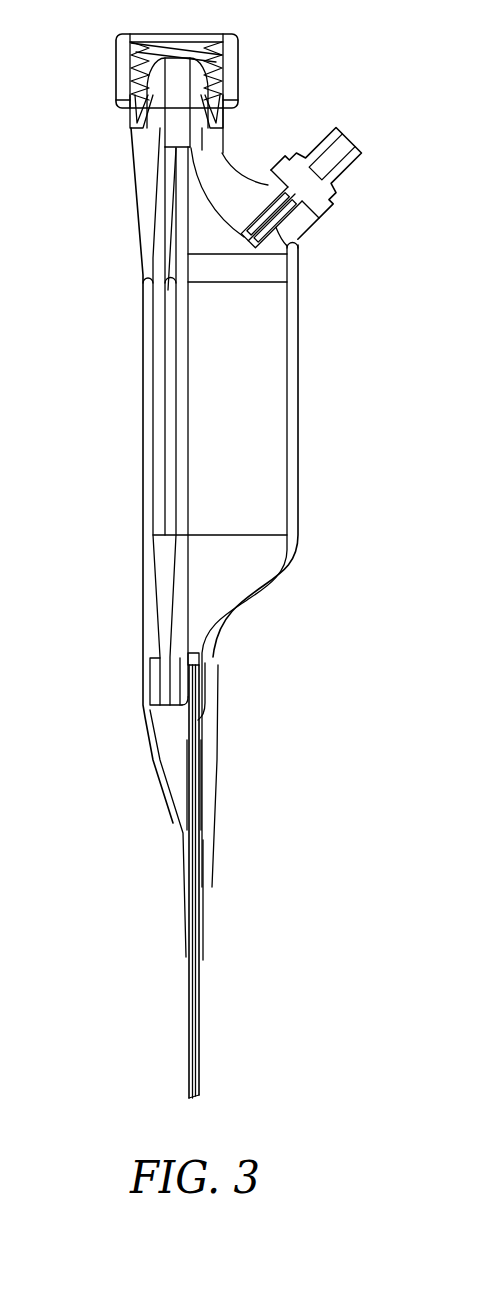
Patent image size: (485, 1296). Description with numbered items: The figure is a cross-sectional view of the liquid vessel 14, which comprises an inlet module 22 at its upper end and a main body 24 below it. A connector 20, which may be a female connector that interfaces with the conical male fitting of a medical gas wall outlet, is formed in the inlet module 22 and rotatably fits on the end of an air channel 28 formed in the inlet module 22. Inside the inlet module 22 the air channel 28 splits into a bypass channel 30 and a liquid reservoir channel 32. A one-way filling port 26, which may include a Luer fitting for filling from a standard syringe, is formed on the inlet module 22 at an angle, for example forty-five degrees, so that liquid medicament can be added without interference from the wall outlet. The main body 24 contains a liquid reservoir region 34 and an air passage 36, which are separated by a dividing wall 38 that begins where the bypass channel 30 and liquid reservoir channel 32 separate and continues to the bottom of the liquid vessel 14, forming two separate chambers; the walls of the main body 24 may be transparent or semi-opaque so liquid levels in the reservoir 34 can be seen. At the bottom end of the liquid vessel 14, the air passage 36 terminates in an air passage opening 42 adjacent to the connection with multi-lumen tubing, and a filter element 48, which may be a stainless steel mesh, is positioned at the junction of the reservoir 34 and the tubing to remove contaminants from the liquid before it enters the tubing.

The liquid vessel 14 is at (329, 356).
The connector 20 is at (210, 34).
The inlet module 22 is at (235, 181).
The main body 24 is at (289, 429).
The one-way filling port 26 is at (345, 143).
The air channel 28 is at (172, 103).
The bypass channel 30 is at (162, 170).
The liquid reservoir channel 32 is at (195, 180).
The liquid reservoir region 34 is at (246, 423).
The air passage 36 is at (158, 370).
The dividing wall 38 is at (180, 227).
The air passage opening 42 is at (163, 683).
The filter element 48 is at (201, 658).